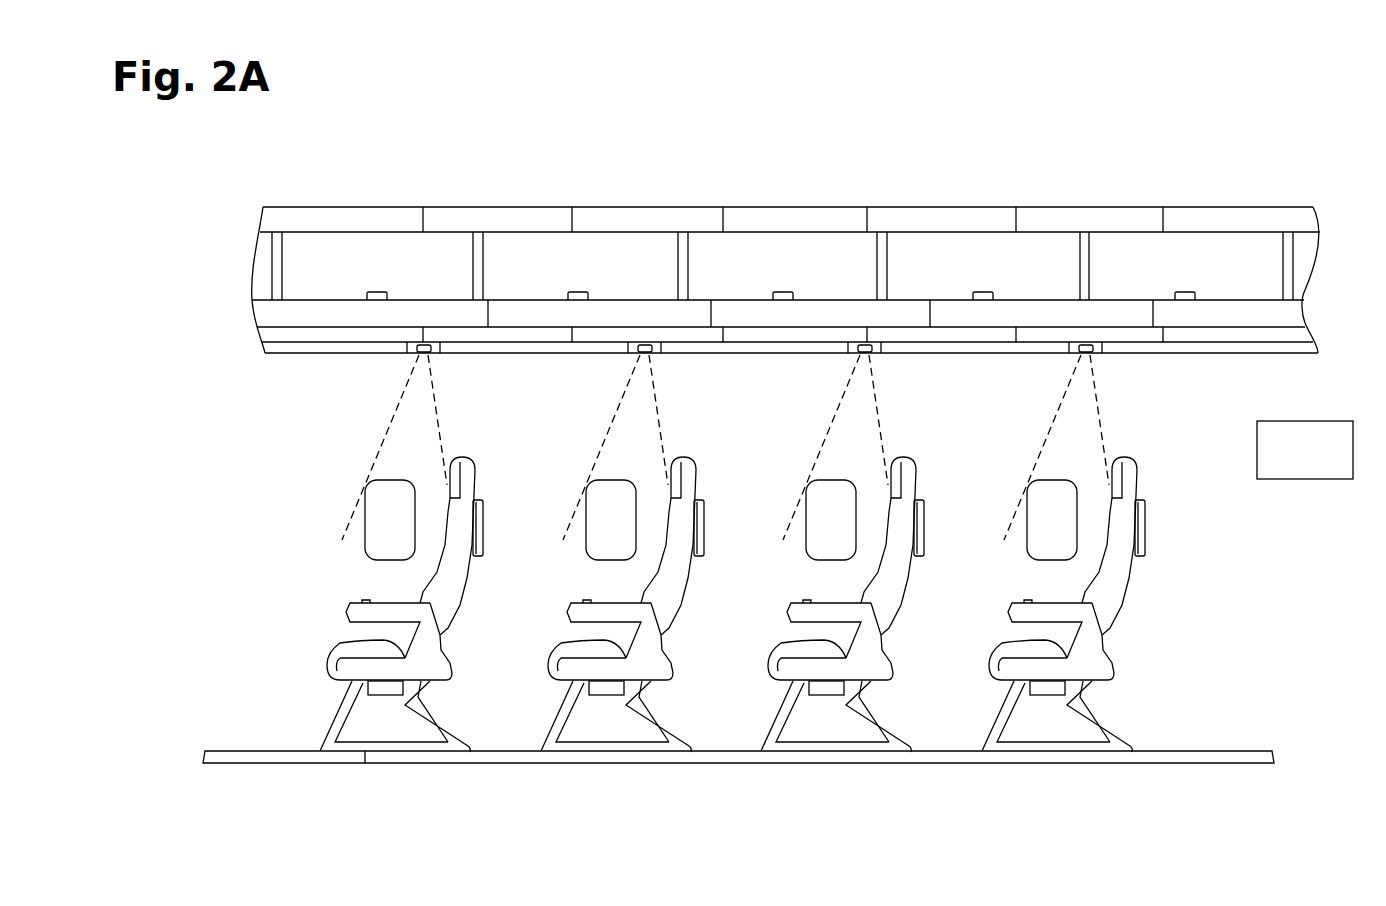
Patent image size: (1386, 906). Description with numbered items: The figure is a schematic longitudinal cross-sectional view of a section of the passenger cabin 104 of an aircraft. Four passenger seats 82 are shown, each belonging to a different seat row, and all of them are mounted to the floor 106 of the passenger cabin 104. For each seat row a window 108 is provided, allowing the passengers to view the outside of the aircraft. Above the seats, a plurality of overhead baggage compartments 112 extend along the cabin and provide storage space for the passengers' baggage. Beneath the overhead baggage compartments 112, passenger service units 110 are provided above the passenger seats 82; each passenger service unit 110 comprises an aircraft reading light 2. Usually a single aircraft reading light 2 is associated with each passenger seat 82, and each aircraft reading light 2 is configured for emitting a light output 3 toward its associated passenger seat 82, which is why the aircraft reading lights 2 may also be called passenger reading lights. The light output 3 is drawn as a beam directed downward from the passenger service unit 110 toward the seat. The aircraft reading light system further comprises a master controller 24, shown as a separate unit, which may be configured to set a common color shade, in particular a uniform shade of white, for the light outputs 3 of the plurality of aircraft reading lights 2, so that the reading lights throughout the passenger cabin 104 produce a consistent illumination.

The aircraft reading light 2 is at (432, 357).
The light output 3 is at (331, 527).
The master controller 24 is at (1310, 465).
The passenger seat 82 is at (466, 446).
The passenger cabin 104 is at (260, 602).
The floor 106 is at (1218, 750).
The window 108 is at (375, 505).
The passenger service unit 110 is at (406, 362).
The overhead baggage compartment 112 is at (407, 252).